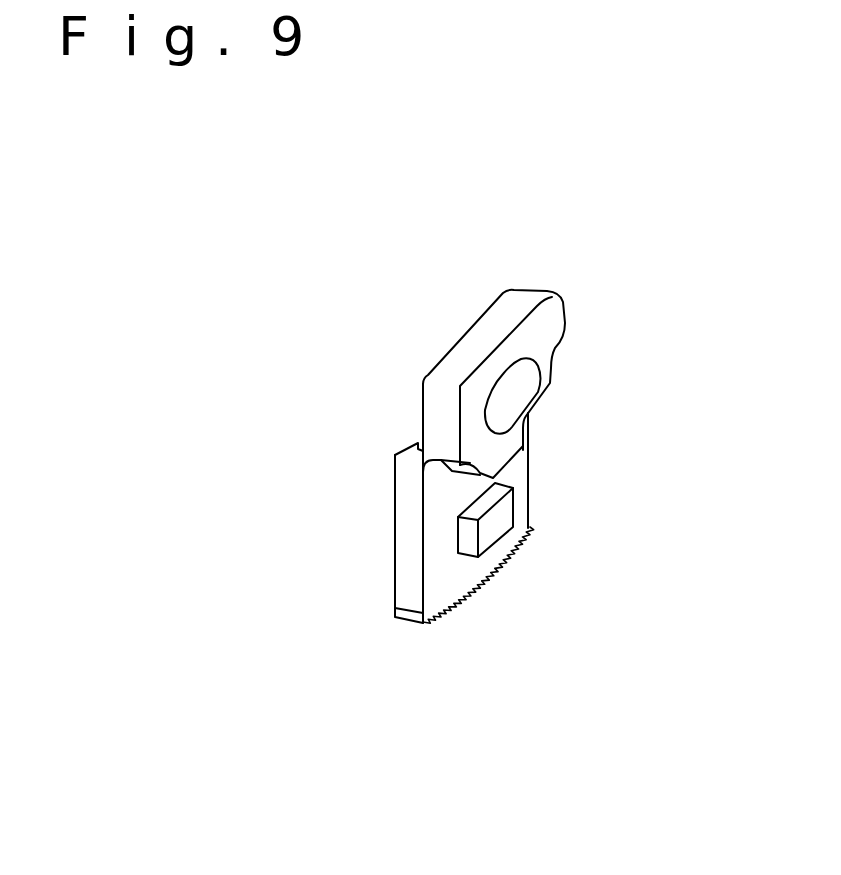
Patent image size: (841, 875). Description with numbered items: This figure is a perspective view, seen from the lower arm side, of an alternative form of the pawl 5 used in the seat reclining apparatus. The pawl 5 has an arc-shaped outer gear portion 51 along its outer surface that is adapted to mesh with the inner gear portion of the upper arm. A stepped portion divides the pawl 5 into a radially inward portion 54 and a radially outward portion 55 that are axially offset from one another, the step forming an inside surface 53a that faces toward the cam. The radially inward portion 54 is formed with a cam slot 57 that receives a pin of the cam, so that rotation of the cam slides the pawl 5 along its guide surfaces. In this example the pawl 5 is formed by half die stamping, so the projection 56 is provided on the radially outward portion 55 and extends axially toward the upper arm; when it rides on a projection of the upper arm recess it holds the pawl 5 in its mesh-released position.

The pawl 5 is at (599, 355).
The outer gear portion 51 is at (472, 603).
The inside surface 53a is at (410, 450).
The radially inward portion 54 is at (460, 412).
The radially outward portion 55 is at (407, 540).
The projection 56 is at (500, 527).
The cam slot 57 is at (505, 397).